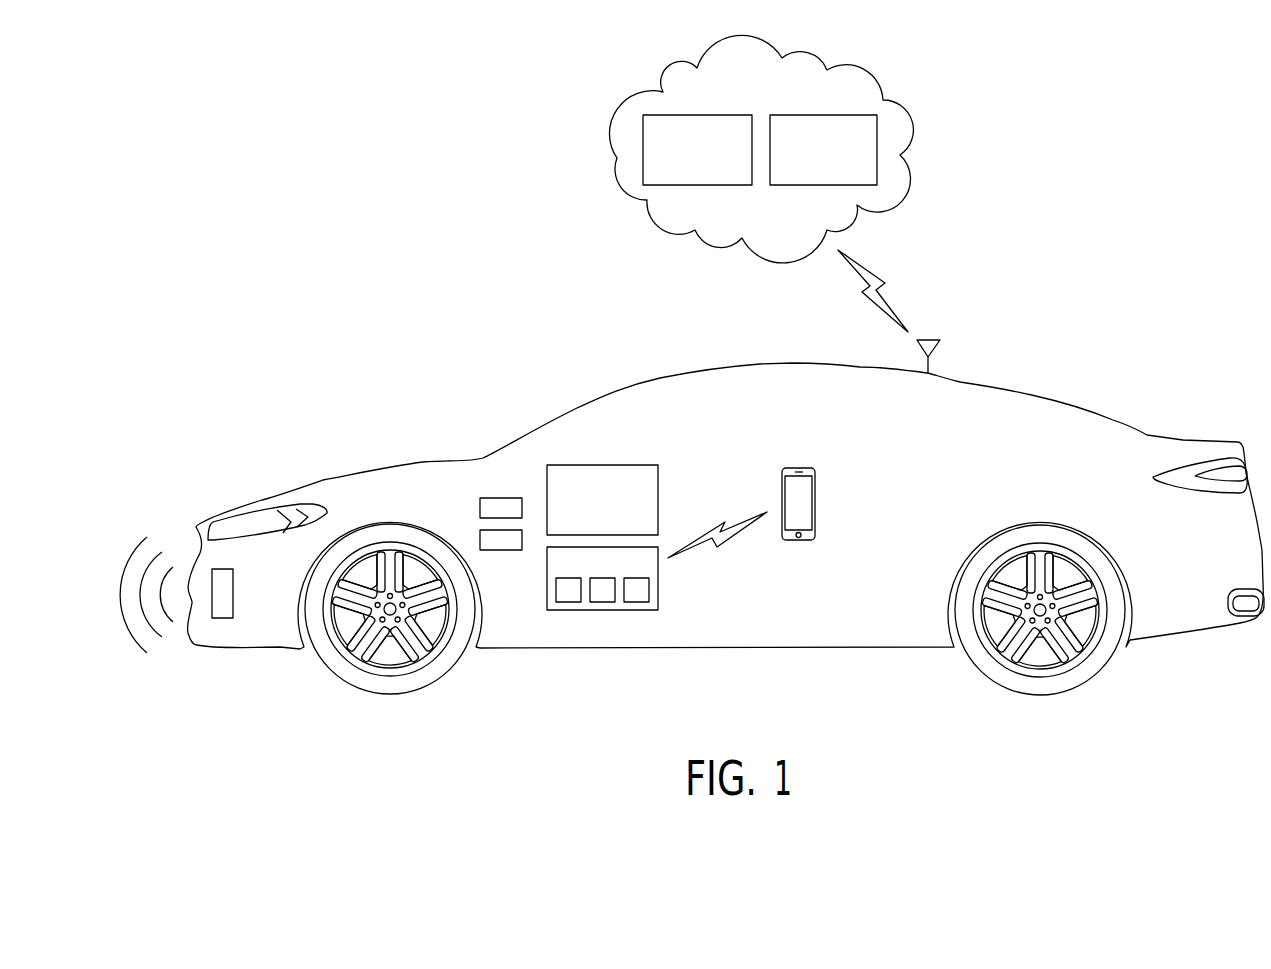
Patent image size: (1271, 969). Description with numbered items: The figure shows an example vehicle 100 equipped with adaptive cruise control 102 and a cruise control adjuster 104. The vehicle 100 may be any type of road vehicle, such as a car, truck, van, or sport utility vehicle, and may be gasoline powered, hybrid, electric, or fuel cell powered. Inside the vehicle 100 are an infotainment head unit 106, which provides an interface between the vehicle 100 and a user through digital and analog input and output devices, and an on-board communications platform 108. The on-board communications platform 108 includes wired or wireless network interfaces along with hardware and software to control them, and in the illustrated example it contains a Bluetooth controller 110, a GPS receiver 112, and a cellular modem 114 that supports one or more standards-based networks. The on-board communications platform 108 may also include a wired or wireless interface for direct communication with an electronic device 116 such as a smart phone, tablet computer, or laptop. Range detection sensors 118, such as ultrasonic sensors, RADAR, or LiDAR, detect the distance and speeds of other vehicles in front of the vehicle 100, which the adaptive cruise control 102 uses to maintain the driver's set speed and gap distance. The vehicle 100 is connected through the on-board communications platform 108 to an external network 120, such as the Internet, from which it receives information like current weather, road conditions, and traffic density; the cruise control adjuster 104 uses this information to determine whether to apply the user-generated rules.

The vehicle 100 is at (1210, 440).
The adaptive cruise control 102 is at (500, 498).
The cruise control adjuster 104 is at (500, 550).
The infotainment head unit 106 is at (603, 465).
The on-board communications platform 108 is at (646, 631).
The Bluetooth controller 110 is at (568, 603).
The GPS receiver 112 is at (602, 603).
The cellular modem 114 is at (636, 603).
The electronic device 116 is at (815, 503).
The range detection sensors 118 is at (222, 618).
The external network 120 is at (915, 182).